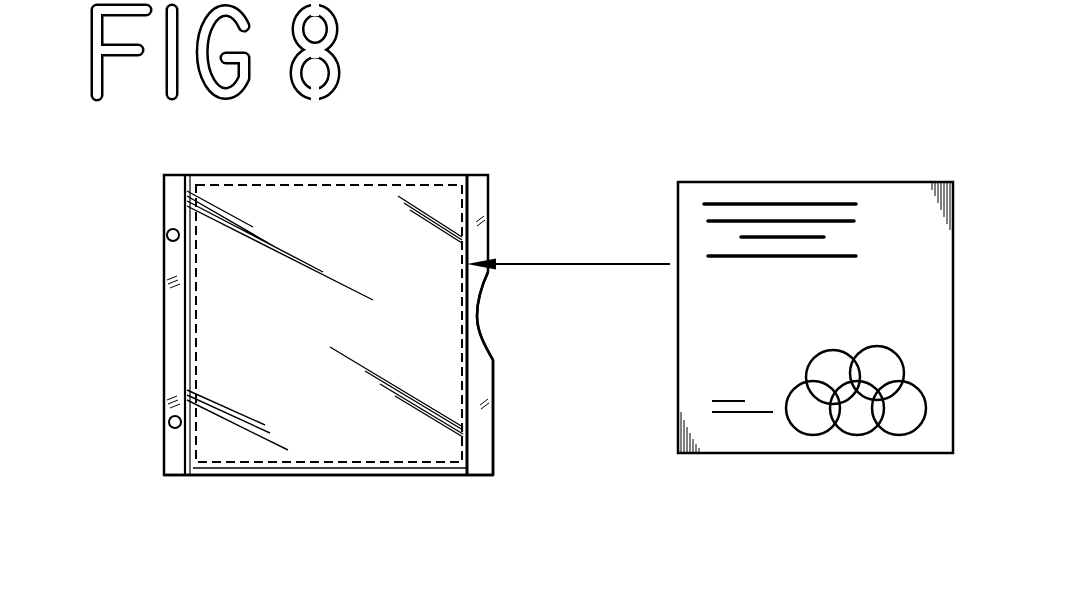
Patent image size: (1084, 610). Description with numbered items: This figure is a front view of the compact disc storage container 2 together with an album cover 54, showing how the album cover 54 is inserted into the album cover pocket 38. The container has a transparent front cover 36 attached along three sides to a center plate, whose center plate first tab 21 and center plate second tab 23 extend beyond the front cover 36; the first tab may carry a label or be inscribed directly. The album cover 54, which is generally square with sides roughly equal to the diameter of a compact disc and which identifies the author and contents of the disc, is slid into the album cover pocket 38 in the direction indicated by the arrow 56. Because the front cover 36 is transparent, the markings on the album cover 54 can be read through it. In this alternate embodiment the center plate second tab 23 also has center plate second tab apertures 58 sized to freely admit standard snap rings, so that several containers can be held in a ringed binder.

The compact disc storage container 2 is at (552, 103).
The center plate first tab 21 is at (480, 446).
The center plate second tab 23 is at (172, 328).
The front cover 36 is at (380, 202).
The album cover pocket 38 is at (475, 378).
The album cover 54 is at (798, 182).
The arrow 56 is at (570, 262).
The center plate second tab apertures 58 is at (170, 242).